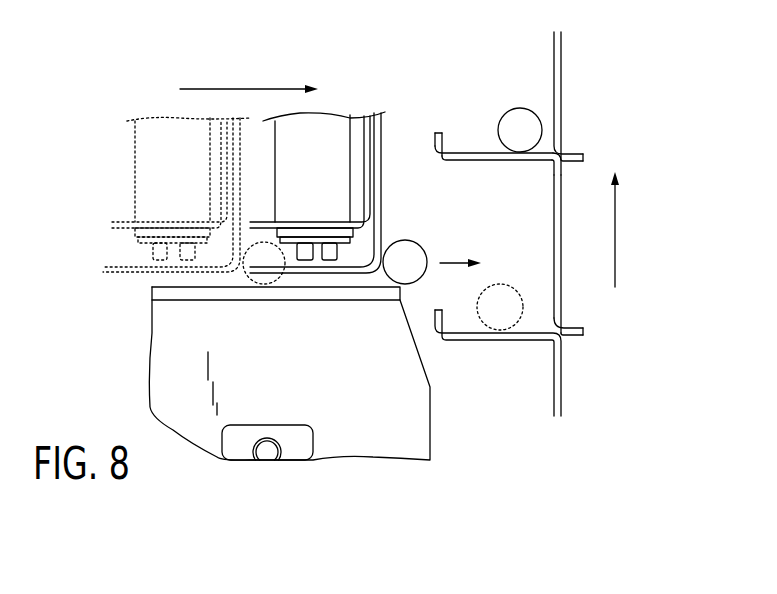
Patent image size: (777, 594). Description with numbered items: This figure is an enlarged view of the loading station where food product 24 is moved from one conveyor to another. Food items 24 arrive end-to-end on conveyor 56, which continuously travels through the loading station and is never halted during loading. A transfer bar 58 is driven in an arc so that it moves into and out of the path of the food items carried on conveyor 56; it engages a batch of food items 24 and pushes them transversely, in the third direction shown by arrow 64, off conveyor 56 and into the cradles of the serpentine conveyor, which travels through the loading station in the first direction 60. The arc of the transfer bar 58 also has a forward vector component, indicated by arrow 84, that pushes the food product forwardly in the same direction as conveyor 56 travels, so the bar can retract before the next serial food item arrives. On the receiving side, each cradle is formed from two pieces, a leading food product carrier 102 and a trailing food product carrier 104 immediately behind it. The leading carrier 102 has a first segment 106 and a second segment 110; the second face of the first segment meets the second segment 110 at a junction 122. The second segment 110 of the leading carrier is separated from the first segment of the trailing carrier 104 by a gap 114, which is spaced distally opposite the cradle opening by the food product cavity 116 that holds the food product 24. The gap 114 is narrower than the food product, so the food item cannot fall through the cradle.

The food product 24 is at (425, 243).
The conveyor 56 is at (283, 303).
The transfer bar 58 is at (382, 143).
The first direction 60 is at (615, 235).
The third direction 64 is at (466, 257).
The arrow 84 is at (240, 89).
The leading food product carrier 102 is at (440, 156).
The trailing food product carrier 104 is at (443, 337).
The first segment 106 is at (472, 160).
The second segment 110 is at (555, 210).
The gap 114 is at (573, 337).
The food product cavity 116 is at (537, 268).
The junction 122 is at (547, 163).